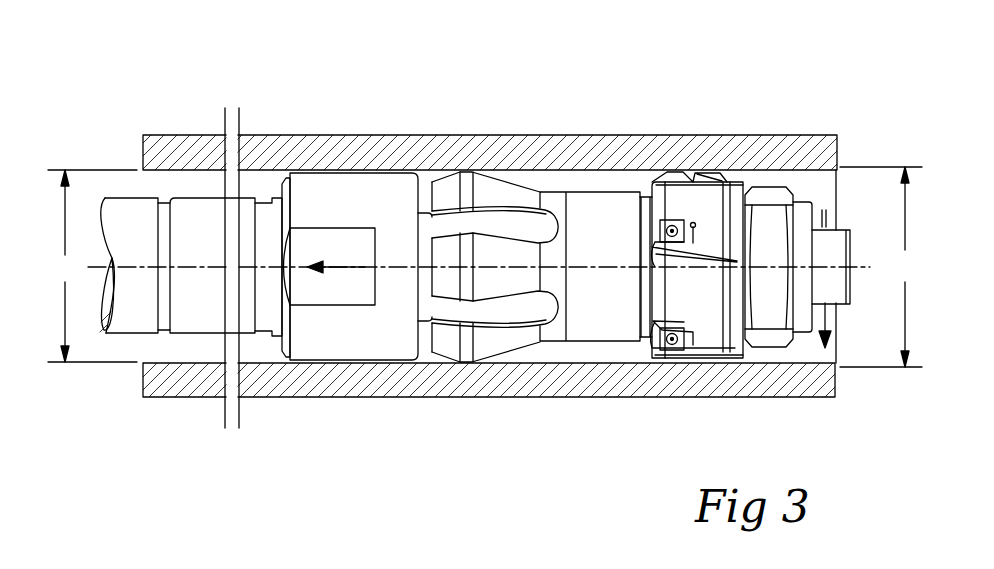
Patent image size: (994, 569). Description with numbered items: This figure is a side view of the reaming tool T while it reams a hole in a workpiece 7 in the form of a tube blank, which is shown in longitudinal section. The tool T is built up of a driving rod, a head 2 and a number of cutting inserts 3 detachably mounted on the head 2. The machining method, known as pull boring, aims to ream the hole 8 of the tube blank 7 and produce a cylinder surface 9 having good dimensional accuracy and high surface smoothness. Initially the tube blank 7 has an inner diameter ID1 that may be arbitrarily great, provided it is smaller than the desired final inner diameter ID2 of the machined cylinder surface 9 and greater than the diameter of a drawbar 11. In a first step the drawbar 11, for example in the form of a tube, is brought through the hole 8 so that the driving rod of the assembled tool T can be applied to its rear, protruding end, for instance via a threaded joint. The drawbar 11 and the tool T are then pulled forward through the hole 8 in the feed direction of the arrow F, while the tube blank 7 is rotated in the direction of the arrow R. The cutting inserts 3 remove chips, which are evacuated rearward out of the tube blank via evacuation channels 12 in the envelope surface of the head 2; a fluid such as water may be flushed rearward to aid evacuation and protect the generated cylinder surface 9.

The head 2 is at (676, 217).
The cutting inserts 3 is at (646, 226).
The workpiece 7 is at (357, 219).
The hole 8 is at (258, 183).
The cylinder surface 9 is at (770, 360).
The drawbar 11 is at (121, 213).
The evacuation channels 12 is at (664, 262).
The reaming tool T is at (565, 166).
The feed direction F is at (336, 256).
The rotation direction R is at (827, 308).
The inner diameter ID1 is at (92, 266).
The final inner diameter ID2 is at (881, 267).